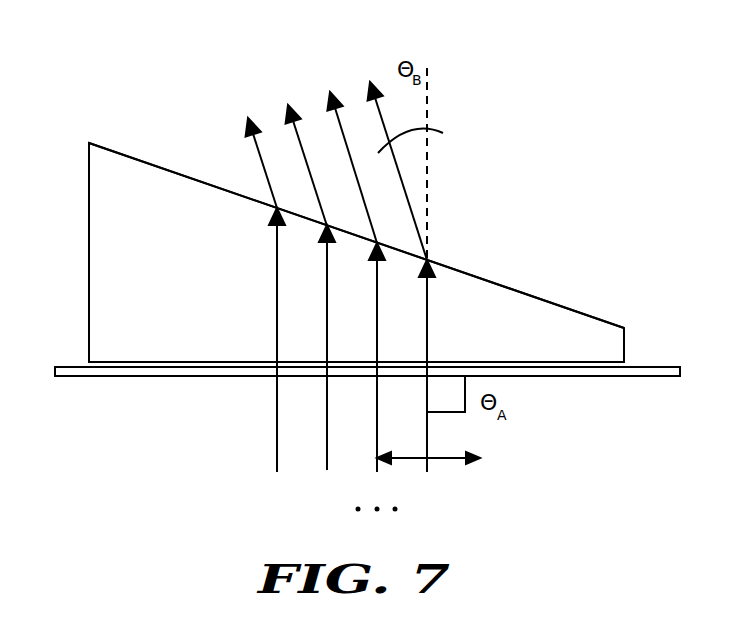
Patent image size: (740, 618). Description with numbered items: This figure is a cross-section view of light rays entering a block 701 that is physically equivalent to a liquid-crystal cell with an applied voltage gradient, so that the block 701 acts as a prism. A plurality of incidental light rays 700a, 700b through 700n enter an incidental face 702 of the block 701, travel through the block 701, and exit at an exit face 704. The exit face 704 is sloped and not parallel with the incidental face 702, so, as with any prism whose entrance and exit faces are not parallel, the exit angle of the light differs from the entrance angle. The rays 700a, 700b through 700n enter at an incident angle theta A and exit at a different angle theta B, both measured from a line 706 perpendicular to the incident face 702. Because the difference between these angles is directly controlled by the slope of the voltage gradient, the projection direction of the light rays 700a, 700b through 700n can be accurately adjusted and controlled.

The block 701 is at (110, 274).
The incidental face 702 is at (533, 370).
The exit face 704 is at (530, 292).
The line perpendicular to the incident face 706 is at (430, 90).
The incidental light ray 700a is at (275, 409).
The incidental light ray 700b is at (325, 468).
The incidental light ray 700n is at (428, 468).